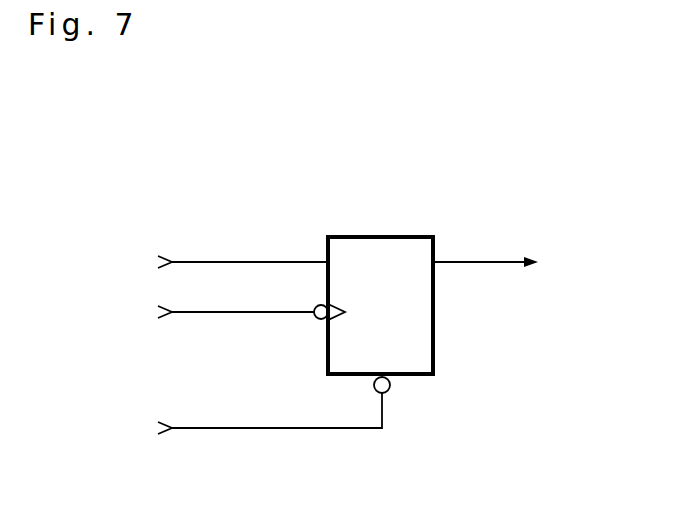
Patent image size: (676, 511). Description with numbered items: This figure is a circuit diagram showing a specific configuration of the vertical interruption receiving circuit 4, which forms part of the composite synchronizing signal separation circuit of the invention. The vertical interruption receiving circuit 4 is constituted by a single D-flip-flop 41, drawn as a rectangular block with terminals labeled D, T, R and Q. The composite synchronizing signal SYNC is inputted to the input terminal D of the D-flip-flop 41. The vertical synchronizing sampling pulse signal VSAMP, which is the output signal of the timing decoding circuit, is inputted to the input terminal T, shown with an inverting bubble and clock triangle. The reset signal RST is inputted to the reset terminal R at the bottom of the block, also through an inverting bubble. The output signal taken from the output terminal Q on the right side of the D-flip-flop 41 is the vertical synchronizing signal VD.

The vertical interruption receiving circuit 4 is at (466, 154).
The D-flip-flop 41 is at (376, 234).
The composite synchronizing signal SYNC is at (198, 262).
The vertical synchronizing sampling pulse signal VSAMP is at (181, 309).
The reset signal RST is at (237, 418).
The vertical synchronizing signal VD is at (508, 264).